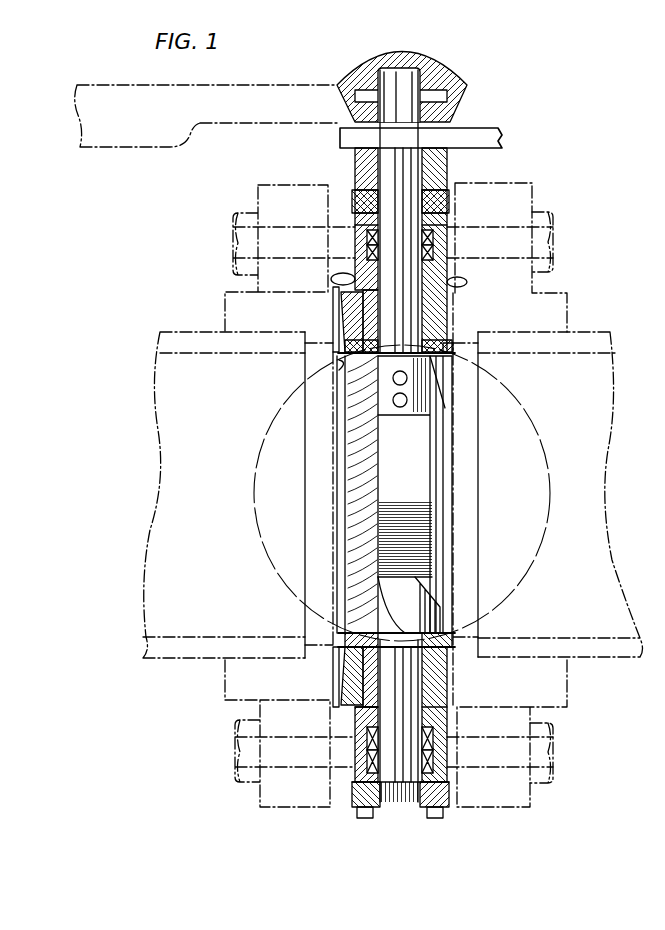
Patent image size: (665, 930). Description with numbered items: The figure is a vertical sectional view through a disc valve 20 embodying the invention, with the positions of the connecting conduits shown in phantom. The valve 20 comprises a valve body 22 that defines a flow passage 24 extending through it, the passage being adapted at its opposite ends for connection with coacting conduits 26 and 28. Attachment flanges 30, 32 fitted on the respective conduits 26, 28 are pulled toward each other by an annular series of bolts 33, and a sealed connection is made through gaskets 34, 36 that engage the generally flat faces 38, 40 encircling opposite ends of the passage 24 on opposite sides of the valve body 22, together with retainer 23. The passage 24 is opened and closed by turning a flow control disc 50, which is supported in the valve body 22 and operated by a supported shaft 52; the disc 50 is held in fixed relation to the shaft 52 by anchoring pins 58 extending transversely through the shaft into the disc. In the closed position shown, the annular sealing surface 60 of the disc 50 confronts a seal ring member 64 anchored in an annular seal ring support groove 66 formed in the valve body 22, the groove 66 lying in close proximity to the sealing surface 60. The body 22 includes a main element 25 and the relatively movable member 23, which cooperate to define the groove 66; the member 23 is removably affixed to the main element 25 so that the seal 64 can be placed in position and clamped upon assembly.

The disc valve 20 is at (505, 88).
The valve body 22 is at (440, 306).
The retainer 23 is at (334, 300).
The flow passage 24 is at (352, 357).
The main element 25 is at (335, 277).
The conduit 26 is at (610, 332).
The conduit 28 is at (160, 332).
The attachment flange 30 is at (528, 183).
The attachment flange 32 is at (258, 185).
The bolts 33 is at (554, 230).
The gasket 34 is at (335, 684).
The gasket 36 is at (480, 340).
The flat face 38 is at (348, 296).
The flat face 40 is at (399, 436).
The flow control disc 50 is at (368, 458).
The shaft 52 is at (410, 168).
The anchoring pins 58 is at (408, 401).
The annular sealing surface 60 is at (395, 356).
The seal ring member 64 is at (366, 343).
The seal ring support groove 66 is at (345, 332).